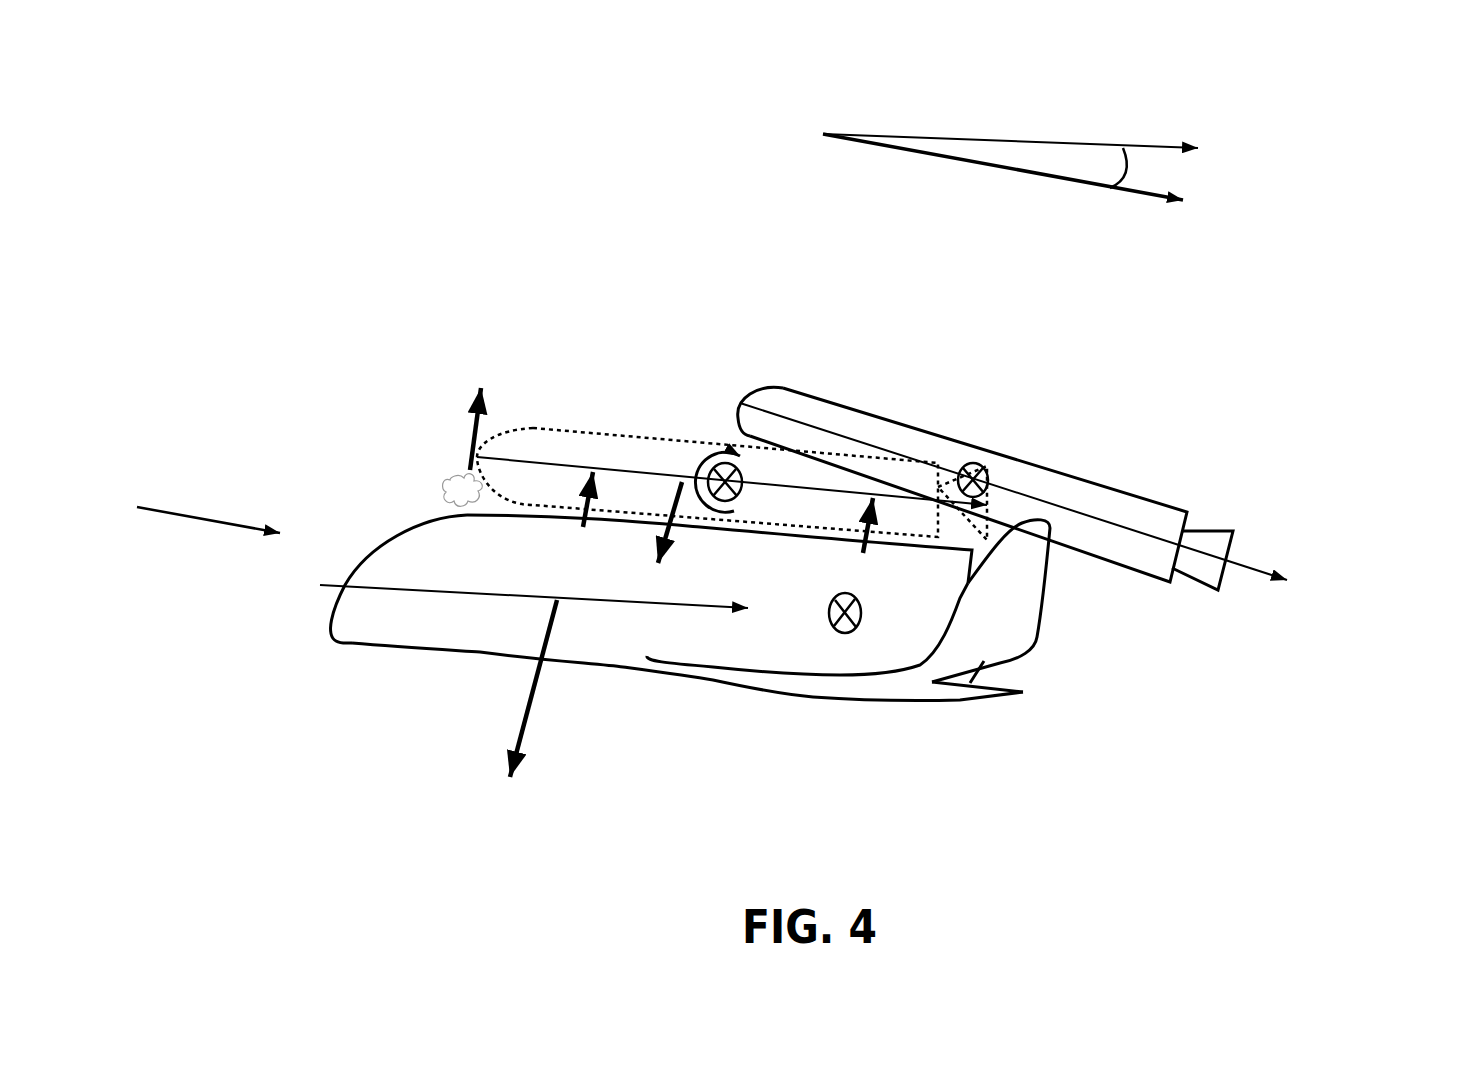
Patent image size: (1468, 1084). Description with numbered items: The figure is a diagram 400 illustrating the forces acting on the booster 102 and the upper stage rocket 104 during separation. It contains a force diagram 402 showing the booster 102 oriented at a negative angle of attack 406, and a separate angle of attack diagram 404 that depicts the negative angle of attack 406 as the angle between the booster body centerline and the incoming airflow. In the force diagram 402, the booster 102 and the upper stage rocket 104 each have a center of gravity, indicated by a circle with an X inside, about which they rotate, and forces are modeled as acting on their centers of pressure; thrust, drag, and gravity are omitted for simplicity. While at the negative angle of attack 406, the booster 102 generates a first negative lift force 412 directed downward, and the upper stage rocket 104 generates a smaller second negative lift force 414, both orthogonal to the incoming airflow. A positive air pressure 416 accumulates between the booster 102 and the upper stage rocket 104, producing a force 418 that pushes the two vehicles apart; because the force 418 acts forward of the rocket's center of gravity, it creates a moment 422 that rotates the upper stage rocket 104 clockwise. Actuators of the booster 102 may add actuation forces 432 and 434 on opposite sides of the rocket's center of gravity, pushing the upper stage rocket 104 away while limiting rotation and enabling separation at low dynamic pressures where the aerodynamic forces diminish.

The diagram 400 is at (767, 414).
The force diagram 402 is at (403, 252).
The angle of attack diagram 404 is at (1113, 292).
The negative angle of attack 406 is at (1120, 178).
The booster 102 is at (832, 698).
The upper stage rocket 104 is at (1150, 498).
The first negative lift force 412 is at (530, 713).
The second negative lift force 414 is at (672, 548).
The positive air pressure 416 is at (447, 476).
The force 418 is at (487, 398).
The moment 422 is at (703, 478).
The actuation force 432 is at (579, 524).
The actuation force 434 is at (860, 550).